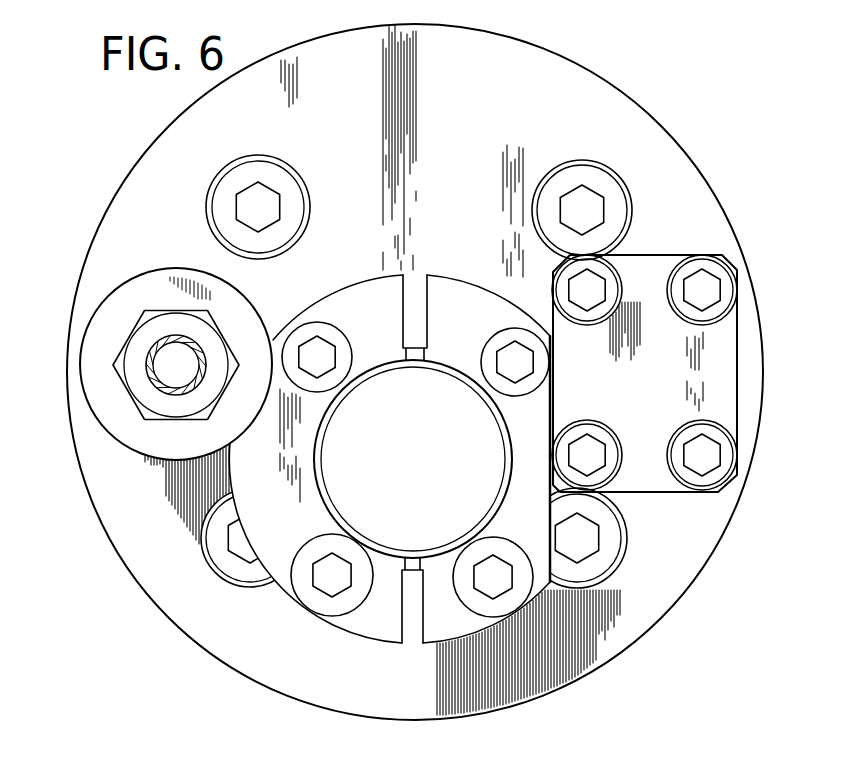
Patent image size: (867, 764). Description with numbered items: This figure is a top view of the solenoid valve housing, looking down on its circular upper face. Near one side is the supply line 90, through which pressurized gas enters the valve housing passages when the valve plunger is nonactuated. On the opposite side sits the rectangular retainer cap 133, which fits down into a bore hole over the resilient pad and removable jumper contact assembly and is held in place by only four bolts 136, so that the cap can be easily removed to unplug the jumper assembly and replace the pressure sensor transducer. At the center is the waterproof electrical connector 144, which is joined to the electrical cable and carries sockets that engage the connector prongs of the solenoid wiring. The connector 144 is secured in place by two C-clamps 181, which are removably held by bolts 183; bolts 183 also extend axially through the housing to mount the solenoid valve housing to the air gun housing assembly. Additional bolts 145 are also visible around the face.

The supply line 90 is at (152, 378).
The retainer cap 133 is at (737, 392).
The bolts 136 is at (673, 273).
The waterproof electrical connector 144 is at (343, 500).
The bolts 145 is at (258, 155).
The C-clamps 181 is at (433, 637).
The bolts 183 is at (308, 333).